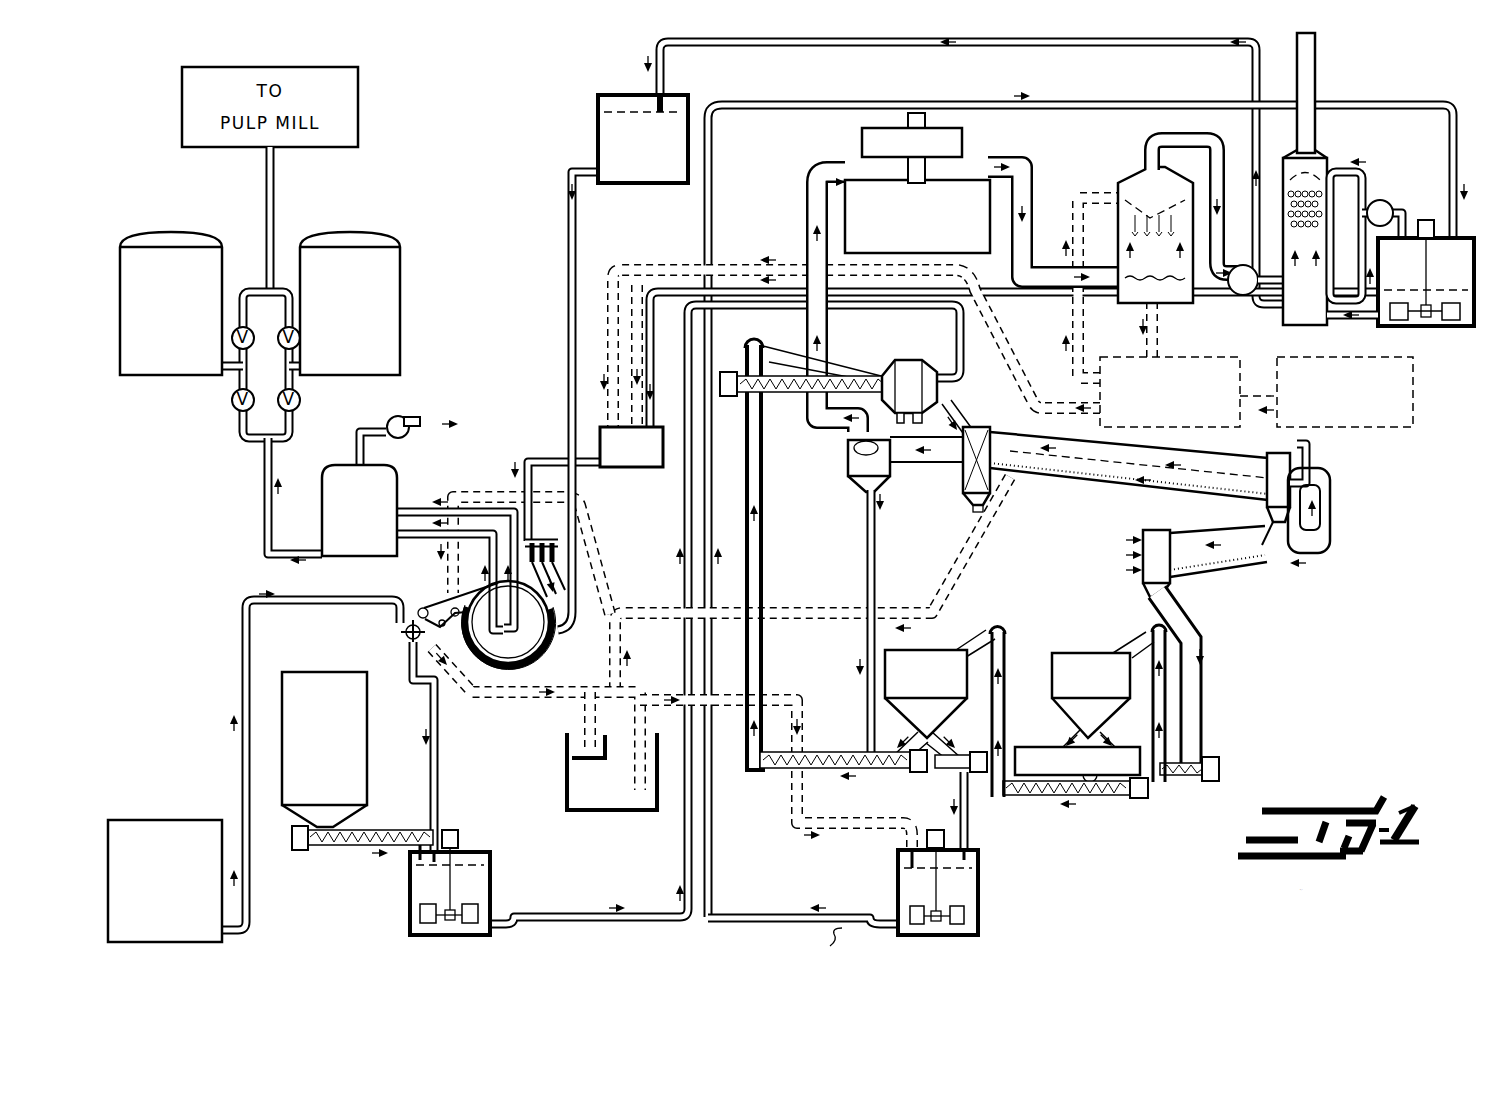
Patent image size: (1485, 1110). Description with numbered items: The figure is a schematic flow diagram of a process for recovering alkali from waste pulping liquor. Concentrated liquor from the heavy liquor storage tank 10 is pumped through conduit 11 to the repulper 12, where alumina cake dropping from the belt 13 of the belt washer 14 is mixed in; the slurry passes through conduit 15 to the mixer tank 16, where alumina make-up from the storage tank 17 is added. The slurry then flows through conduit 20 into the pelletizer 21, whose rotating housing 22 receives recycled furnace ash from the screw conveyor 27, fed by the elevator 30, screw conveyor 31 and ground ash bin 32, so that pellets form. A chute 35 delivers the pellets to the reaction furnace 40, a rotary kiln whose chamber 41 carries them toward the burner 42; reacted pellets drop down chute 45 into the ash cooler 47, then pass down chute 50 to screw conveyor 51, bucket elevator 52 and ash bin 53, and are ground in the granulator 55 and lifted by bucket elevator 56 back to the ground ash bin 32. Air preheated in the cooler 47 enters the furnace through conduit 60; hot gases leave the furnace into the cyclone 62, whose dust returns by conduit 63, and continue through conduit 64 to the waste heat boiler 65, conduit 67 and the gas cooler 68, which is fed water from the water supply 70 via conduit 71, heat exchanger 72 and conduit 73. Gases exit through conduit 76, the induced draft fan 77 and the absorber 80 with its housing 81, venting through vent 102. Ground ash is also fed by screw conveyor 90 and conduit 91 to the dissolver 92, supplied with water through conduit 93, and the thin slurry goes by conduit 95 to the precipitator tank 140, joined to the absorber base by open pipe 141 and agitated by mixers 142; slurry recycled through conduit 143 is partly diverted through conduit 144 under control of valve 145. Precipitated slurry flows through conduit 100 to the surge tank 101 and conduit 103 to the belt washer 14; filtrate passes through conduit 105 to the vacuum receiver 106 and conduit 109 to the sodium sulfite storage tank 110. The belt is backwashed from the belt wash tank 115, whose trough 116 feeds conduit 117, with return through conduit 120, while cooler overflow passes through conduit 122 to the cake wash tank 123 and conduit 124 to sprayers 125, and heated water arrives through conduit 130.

The heavy liquor storage tank 10 is at (177, 940).
The enclosed conduit 11 is at (242, 682).
The repulper 12 is at (400, 635).
The belt 13 is at (428, 602).
The belt washer 14 is at (470, 670).
The conduit 15 is at (434, 775).
The mixer tank 16 is at (335, 944).
The storage tank 17 is at (337, 796).
The conduit 20 is at (568, 913).
The pelletizer 21 is at (915, 362).
The housing 22 is at (881, 378).
The screw conveyor 27 is at (785, 394).
The elevator 30 is at (764, 577).
The screw conveyor 31 is at (851, 754).
The ground ash bin 32 is at (937, 724).
The chute 35 is at (949, 404).
The reaction furnace 40 is at (1142, 492).
The chamber 41 is at (1222, 464).
The burner 42 is at (1317, 471).
The chute 45 is at (1272, 520).
The ash cooler 47 is at (1322, 592).
The chute 50 is at (1196, 690).
The screw conveyor 51 is at (1190, 780).
The bucket elevator 52 is at (1150, 708).
The ash bin 53 is at (1100, 724).
The granulator 55 is at (1040, 748).
The bucket elevator 56 is at (1006, 674).
The conduit 60 is at (1329, 535).
The cyclone 62 is at (848, 462).
The conduit 63 is at (874, 582).
The conduit 64 is at (801, 176).
The waste heat boiler 65 is at (917, 183).
The conduit 67 is at (1030, 192).
The gas cooler 68 is at (1117, 226).
The water supply 70 is at (1358, 427).
The conduit 71 is at (1262, 394).
The heat exchanger 72 is at (1183, 427).
The conduit 73 is at (1082, 347).
The conduit 76 is at (1186, 148).
The induced draft air fan 77 is at (1243, 272).
The absorber 80 is at (1340, 345).
The housing 81 is at (1348, 229).
The screw conveyor 90 is at (968, 748).
The conduit 91 is at (964, 830).
The dissolver 92 is at (1010, 937).
The conduit 93 is at (864, 838).
The conduit 95 is at (866, 100).
The conduit 100 is at (1044, 48).
The belt washer surge tank 101 is at (657, 174).
The vent 102 is at (1315, 60).
The conduit 103 is at (570, 292).
The conduit 105 is at (472, 503).
The vacuum receiver 106 is at (373, 542).
The conduit 109 is at (264, 493).
The sodium sulfite storage tank 110 is at (184, 361).
The belt wash tank 115 is at (575, 806).
The trough 116 is at (569, 742).
The conduit 117 is at (498, 492).
The conduit 120 is at (538, 688).
The conduit 122 is at (659, 352).
The cake wash tank 123 is at (656, 545).
The conduit 124 is at (542, 454).
The sprayers 125 is at (566, 573).
The conduit 130 is at (673, 616).
The precipitator tank 140 is at (1468, 326).
The open pipe 141 is at (1352, 324).
The mixers 142 is at (1442, 224).
The conduit 143 is at (1389, 204).
The conduit 144 is at (1404, 210).
The valve 145 is at (1388, 180).